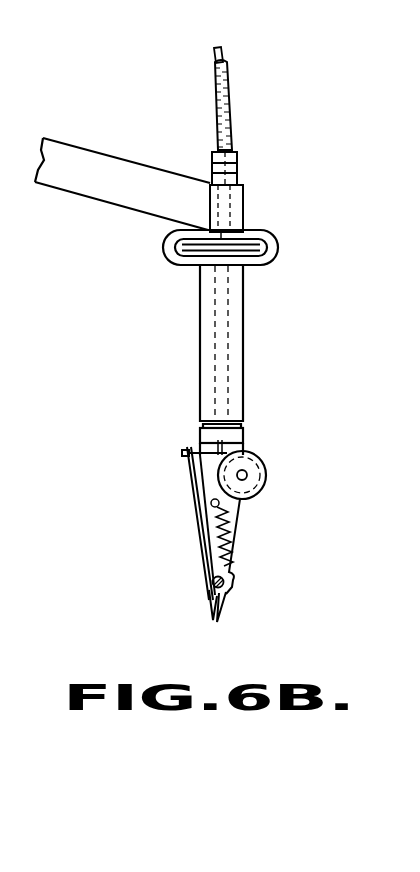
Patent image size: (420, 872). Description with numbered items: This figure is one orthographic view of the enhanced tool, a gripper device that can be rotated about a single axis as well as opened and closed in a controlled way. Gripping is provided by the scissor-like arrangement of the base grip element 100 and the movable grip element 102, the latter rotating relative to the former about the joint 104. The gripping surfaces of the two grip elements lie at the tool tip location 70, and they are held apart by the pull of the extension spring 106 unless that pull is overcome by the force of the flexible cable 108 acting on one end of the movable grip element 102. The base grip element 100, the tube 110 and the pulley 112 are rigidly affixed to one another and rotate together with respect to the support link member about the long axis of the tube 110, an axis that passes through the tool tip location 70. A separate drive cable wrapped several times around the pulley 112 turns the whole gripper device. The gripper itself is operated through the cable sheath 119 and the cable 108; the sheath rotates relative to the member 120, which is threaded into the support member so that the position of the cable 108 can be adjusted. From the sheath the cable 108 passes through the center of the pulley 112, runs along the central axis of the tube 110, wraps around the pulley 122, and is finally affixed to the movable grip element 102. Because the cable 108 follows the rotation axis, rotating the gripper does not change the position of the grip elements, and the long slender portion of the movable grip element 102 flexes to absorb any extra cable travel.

The tool tip location 70 is at (212, 632).
The base grip element 100 is at (235, 515).
The movable grip element 102 is at (192, 483).
The joint 104 is at (226, 590).
The extension spring 106 is at (230, 537).
The flexible cable 108 is at (224, 48).
The tube 110 is at (228, 327).
The pulley 112 is at (257, 232).
The cable sheath 119 is at (230, 100).
The member 120 is at (237, 163).
The pulley 122 is at (267, 477).